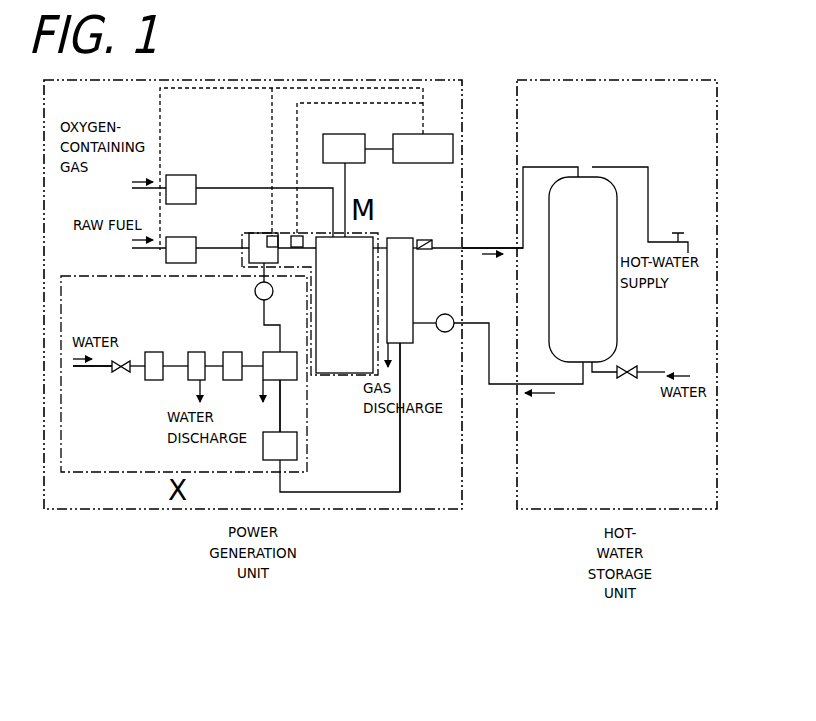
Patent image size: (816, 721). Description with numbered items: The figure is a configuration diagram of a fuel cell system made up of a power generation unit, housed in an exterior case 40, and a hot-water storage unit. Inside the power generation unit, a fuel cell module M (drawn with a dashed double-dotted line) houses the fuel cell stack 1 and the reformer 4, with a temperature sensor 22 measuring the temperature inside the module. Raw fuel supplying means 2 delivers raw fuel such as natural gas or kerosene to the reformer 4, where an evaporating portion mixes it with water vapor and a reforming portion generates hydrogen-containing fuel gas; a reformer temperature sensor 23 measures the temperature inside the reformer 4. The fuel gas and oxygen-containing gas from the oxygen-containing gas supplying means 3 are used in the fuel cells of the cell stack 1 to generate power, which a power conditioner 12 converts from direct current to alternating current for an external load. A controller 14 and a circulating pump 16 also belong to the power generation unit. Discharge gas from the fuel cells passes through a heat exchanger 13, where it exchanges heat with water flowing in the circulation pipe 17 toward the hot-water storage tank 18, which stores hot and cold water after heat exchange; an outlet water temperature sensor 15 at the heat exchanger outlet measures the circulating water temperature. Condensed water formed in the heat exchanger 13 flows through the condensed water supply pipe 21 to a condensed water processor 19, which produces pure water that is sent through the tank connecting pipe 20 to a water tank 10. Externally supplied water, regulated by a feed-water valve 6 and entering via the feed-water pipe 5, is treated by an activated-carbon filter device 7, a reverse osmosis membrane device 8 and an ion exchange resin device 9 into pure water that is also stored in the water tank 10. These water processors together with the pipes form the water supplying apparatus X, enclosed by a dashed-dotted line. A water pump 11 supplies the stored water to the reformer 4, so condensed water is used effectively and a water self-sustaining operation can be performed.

The fuel cell stack 1 is at (332, 360).
The raw fuel supplying means 2 is at (187, 245).
The oxygen-containing gas supplying means 3 is at (190, 187).
The reformer 4 is at (260, 243).
The feed-water pipe 5 is at (88, 368).
The feed-water valve 6 is at (113, 372).
The activated-carbon filter device 7 is at (158, 373).
The reverse osmosis membrane device 8 is at (187, 373).
The ion exchange resin device 9 is at (230, 373).
The water tank 10 is at (293, 373).
The water pump 11 is at (255, 291).
The power conditioner 12 is at (333, 155).
The heat exchanger 13 is at (402, 347).
The controller 14 is at (420, 140).
The outlet water temperature sensor 15 is at (427, 242).
The circulating pump 16 is at (445, 332).
The circulation pipe 17 is at (495, 245).
The hot-water storage tank 18 is at (600, 188).
The condensed water processor 19 is at (293, 442).
The tank connecting pipe 20 is at (280, 405).
The condensed water supply pipe 21 is at (400, 425).
The temperature sensor 22 is at (300, 233).
The reformer temperature sensor 23 is at (272, 236).
The exterior case 40 is at (365, 509).